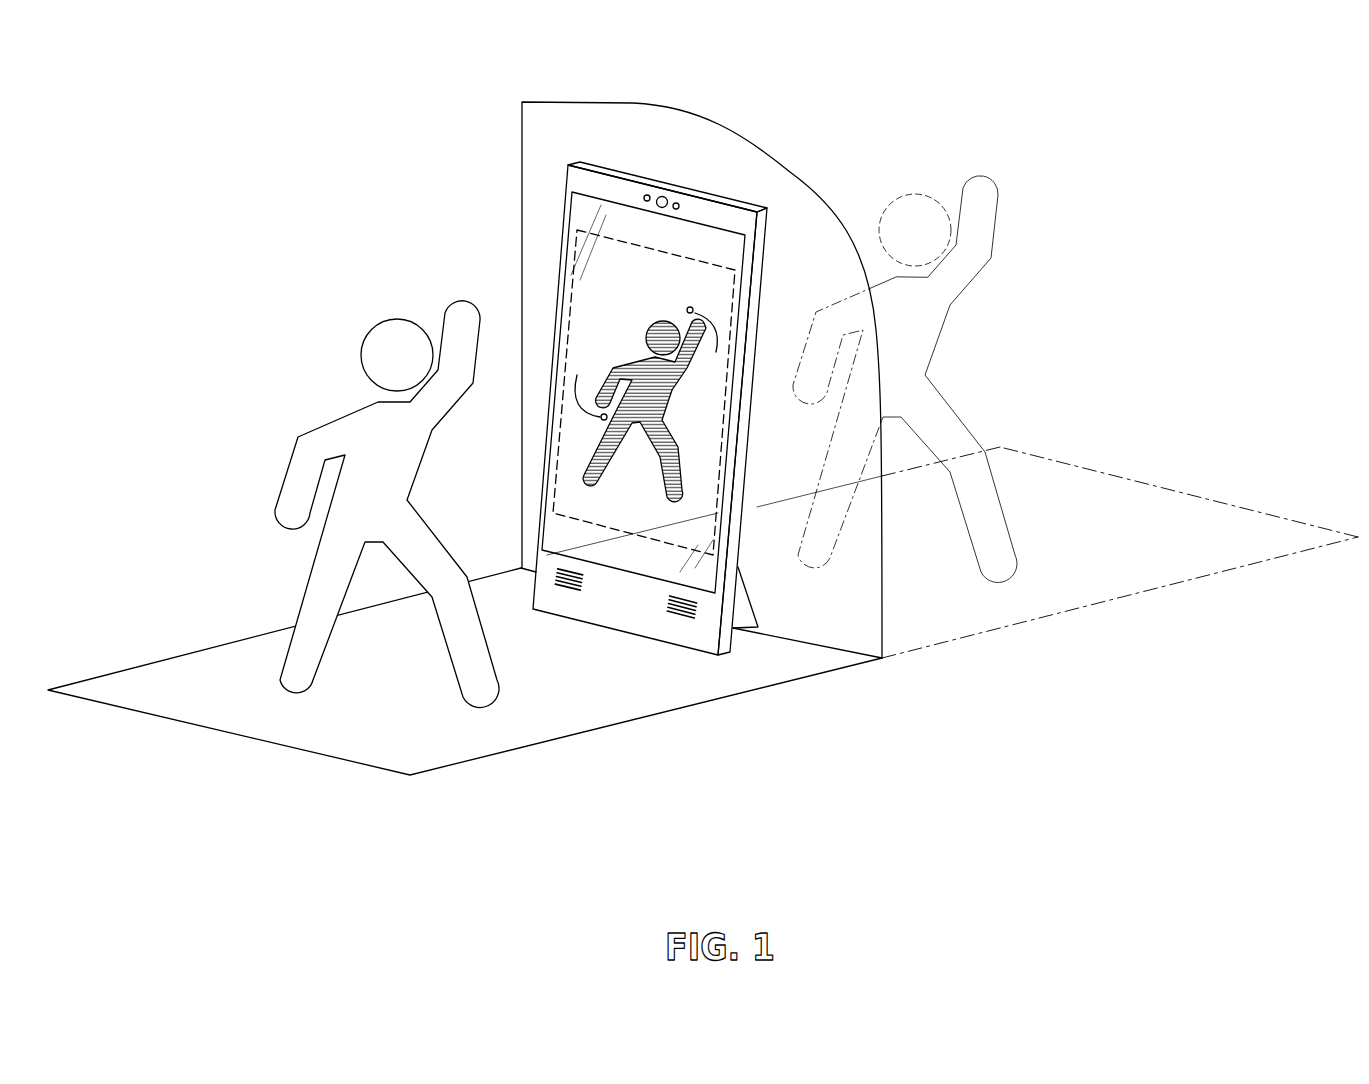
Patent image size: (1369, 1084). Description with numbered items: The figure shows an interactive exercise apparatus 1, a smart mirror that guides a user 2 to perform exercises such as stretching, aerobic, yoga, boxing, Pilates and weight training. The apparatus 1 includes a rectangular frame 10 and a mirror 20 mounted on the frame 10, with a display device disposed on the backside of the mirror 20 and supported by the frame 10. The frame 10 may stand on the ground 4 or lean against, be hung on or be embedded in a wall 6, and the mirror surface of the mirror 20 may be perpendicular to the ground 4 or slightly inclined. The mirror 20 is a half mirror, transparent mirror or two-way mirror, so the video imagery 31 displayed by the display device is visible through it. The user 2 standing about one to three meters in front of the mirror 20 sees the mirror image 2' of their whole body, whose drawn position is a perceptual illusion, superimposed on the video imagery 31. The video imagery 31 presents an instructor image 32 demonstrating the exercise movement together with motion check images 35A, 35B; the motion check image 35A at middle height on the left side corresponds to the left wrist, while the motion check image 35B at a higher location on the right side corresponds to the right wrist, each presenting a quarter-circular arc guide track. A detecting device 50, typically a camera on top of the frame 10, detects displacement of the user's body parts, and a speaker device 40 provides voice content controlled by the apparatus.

The interactive exercise apparatus 1 is at (699, 171).
The user 2 is at (387, 501).
The mirror image 2' is at (930, 379).
The ground 4 is at (763, 670).
The wall 6 is at (545, 137).
The frame 10 is at (727, 198).
The mirror 20 is at (572, 208).
The video imagery 31 is at (558, 300).
The instructor image 32 is at (672, 395).
The motion check image 35A is at (580, 415).
The motion check image 35B is at (715, 320).
The speaker device 40 is at (570, 593).
The detecting device 50 is at (662, 193).